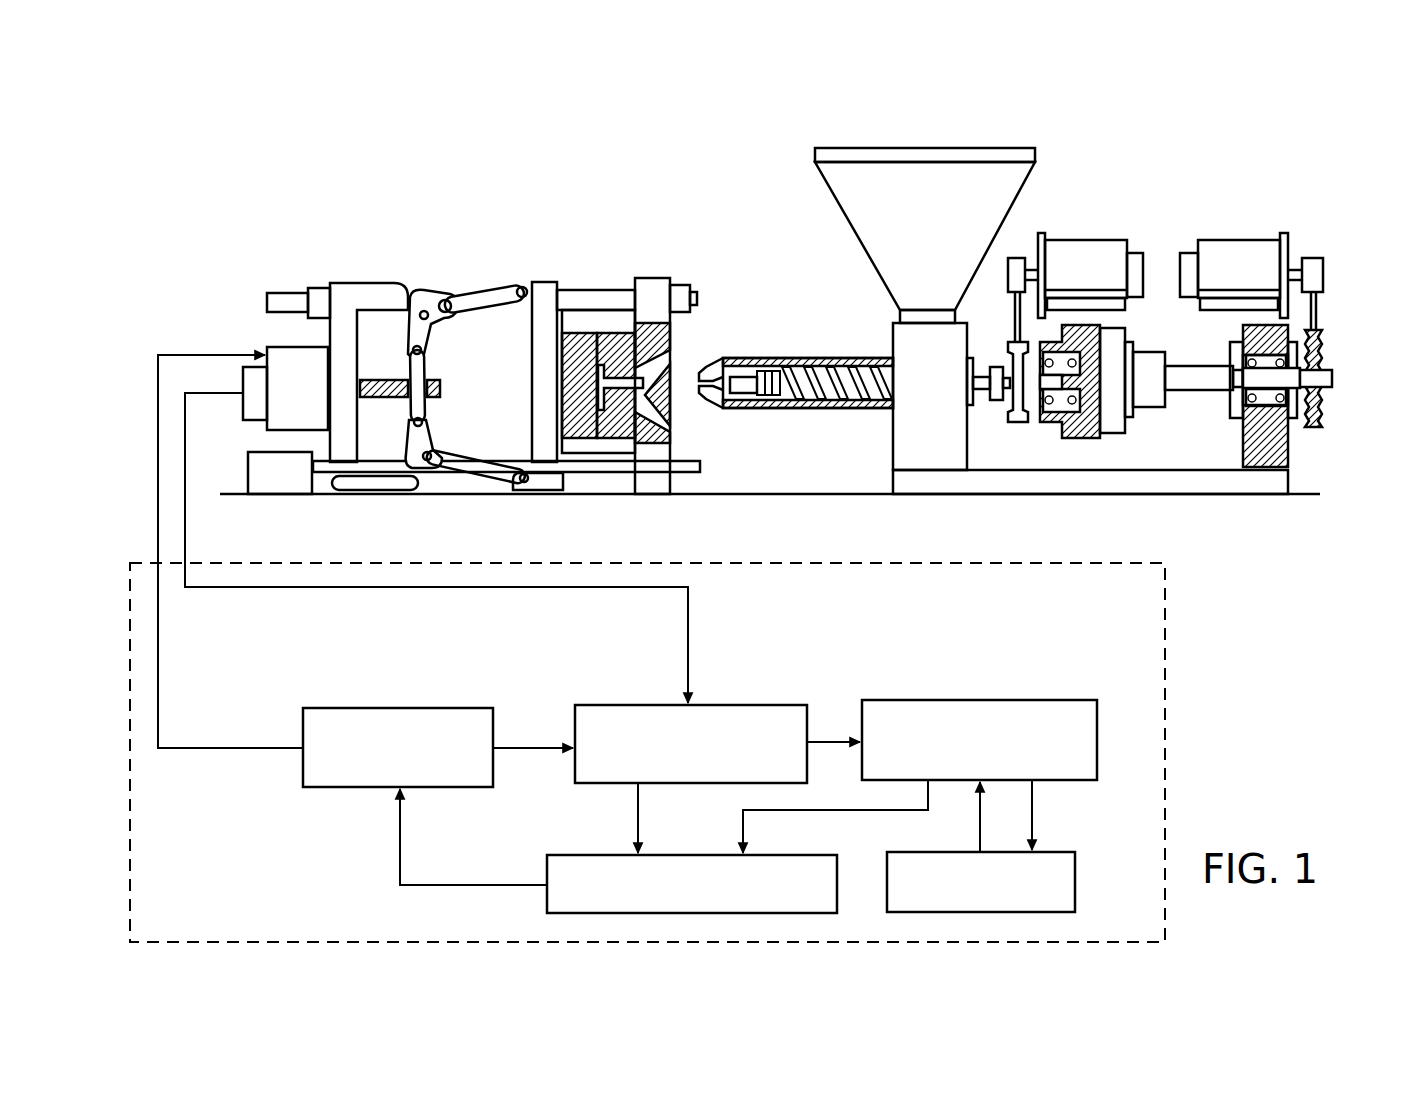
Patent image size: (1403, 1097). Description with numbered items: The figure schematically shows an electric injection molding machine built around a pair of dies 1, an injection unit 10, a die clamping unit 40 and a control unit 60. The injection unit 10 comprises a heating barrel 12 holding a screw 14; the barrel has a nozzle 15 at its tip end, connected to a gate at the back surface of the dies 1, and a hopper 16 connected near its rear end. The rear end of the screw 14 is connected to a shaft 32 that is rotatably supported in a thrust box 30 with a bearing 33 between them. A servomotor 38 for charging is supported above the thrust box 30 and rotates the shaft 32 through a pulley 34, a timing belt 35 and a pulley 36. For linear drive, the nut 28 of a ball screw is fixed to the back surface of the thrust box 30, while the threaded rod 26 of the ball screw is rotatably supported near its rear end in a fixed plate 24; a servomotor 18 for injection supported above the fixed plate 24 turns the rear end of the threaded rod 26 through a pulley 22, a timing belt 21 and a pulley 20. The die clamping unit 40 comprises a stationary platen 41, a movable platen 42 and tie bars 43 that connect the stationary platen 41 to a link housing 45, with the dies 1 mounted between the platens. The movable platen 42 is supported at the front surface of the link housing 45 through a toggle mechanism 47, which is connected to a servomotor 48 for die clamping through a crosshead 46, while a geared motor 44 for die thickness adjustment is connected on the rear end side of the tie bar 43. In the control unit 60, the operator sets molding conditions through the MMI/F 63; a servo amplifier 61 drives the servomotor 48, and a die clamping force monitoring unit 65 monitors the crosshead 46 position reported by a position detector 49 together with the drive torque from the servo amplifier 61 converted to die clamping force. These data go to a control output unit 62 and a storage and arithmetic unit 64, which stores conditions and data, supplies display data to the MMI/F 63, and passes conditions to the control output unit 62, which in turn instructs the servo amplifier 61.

The pair of dies 1 is at (583, 332).
The injection unit 10 is at (766, 176).
The heating barrel 12 is at (805, 358).
The screw 14 is at (813, 408).
The nozzle 15 is at (703, 398).
The hopper 16 is at (932, 148).
The servomotor for injection 18 is at (1240, 245).
The pulley 20 is at (1312, 258).
The timing belt 21 is at (1318, 312).
The pulley 22 is at (1323, 405).
The fixed plate 24 is at (1288, 448).
The threaded rod 26 is at (1195, 390).
The nut 28 is at (1142, 362).
The thrust box 30 is at (1088, 425).
The shaft 32 is at (993, 400).
The bearing 33 is at (1049, 410).
The pulley 34 is at (1018, 424).
The timing belt 35 is at (1013, 303).
The pulley 36 is at (1022, 258).
The servomotor for charging 38 is at (1097, 245).
The die clamping unit 40 is at (481, 176).
The stationary platen 41 is at (650, 282).
The movable platen 42 is at (532, 284).
The tie bars 43 is at (572, 292).
The geared motor 44 is at (272, 470).
The link housing 45 is at (348, 283).
The crosshead 46 is at (377, 380).
The toggle mechanism 47 is at (420, 300).
The servomotor for die clamping 48 is at (280, 350).
The position detector 49 is at (252, 415).
The control unit 60 is at (1178, 650).
The servo amplifier 61 is at (400, 707).
The control output unit 62 is at (686, 855).
The MMI/F 63 is at (1070, 852).
The storage and arithmetic unit 64 is at (1005, 700).
The die clamping force monitoring unit 65 is at (746, 705).